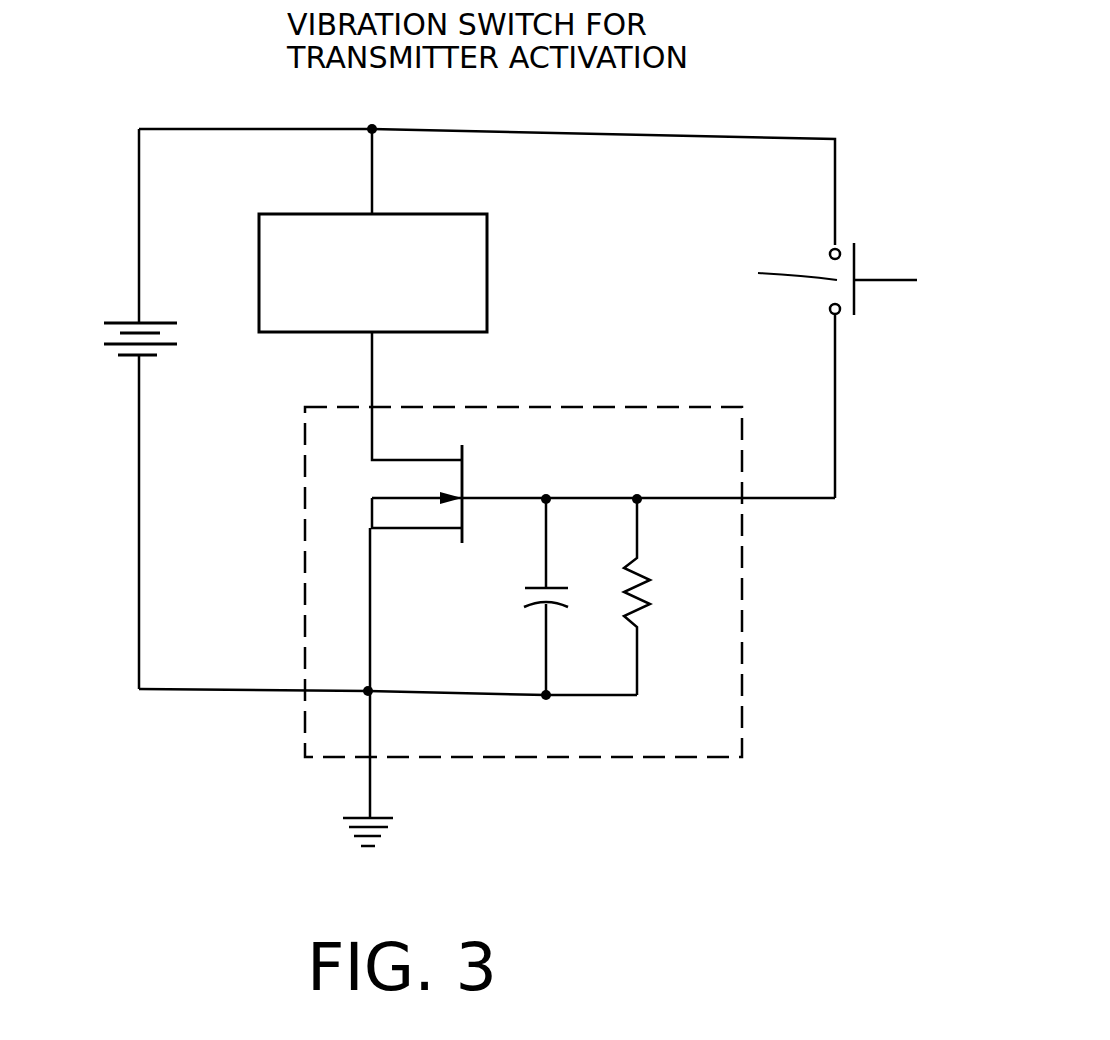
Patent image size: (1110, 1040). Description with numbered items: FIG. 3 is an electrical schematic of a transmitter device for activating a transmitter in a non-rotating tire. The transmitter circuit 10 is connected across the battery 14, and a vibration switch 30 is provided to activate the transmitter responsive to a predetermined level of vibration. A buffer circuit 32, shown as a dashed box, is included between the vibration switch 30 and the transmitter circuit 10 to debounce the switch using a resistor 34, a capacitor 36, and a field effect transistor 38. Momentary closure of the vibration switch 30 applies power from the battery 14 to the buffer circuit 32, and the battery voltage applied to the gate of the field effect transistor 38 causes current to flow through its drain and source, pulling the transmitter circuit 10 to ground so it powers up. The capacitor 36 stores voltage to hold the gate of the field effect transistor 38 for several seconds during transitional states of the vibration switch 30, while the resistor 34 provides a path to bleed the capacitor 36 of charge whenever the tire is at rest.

The transmitter circuit 10 is at (308, 313).
The battery 14 is at (115, 355).
The vibration switch 30 is at (850, 168).
The buffer circuit 32 is at (605, 398).
The resistor 34 is at (648, 602).
The capacitor 36 is at (567, 603).
The field effect transistor 38 is at (482, 452).